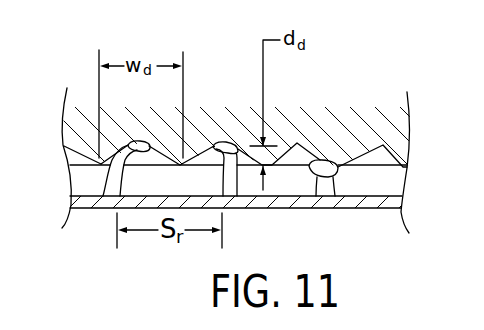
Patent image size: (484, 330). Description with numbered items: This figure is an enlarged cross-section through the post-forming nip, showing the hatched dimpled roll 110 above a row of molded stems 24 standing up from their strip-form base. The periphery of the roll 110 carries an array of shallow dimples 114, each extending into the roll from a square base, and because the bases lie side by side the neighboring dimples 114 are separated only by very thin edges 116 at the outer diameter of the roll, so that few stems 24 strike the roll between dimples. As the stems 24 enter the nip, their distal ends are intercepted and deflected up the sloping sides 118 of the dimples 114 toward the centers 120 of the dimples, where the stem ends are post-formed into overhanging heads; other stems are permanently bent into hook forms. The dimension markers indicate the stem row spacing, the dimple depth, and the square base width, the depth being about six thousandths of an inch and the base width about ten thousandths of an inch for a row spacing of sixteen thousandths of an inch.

The dimpled roll 110 is at (75, 166).
The thin edges 116 is at (100, 163).
The dimples 114 is at (296, 142).
The centers of the dimples 120 is at (382, 144).
The sides of the dimples 118 is at (240, 194).
The stems 24 is at (222, 178).